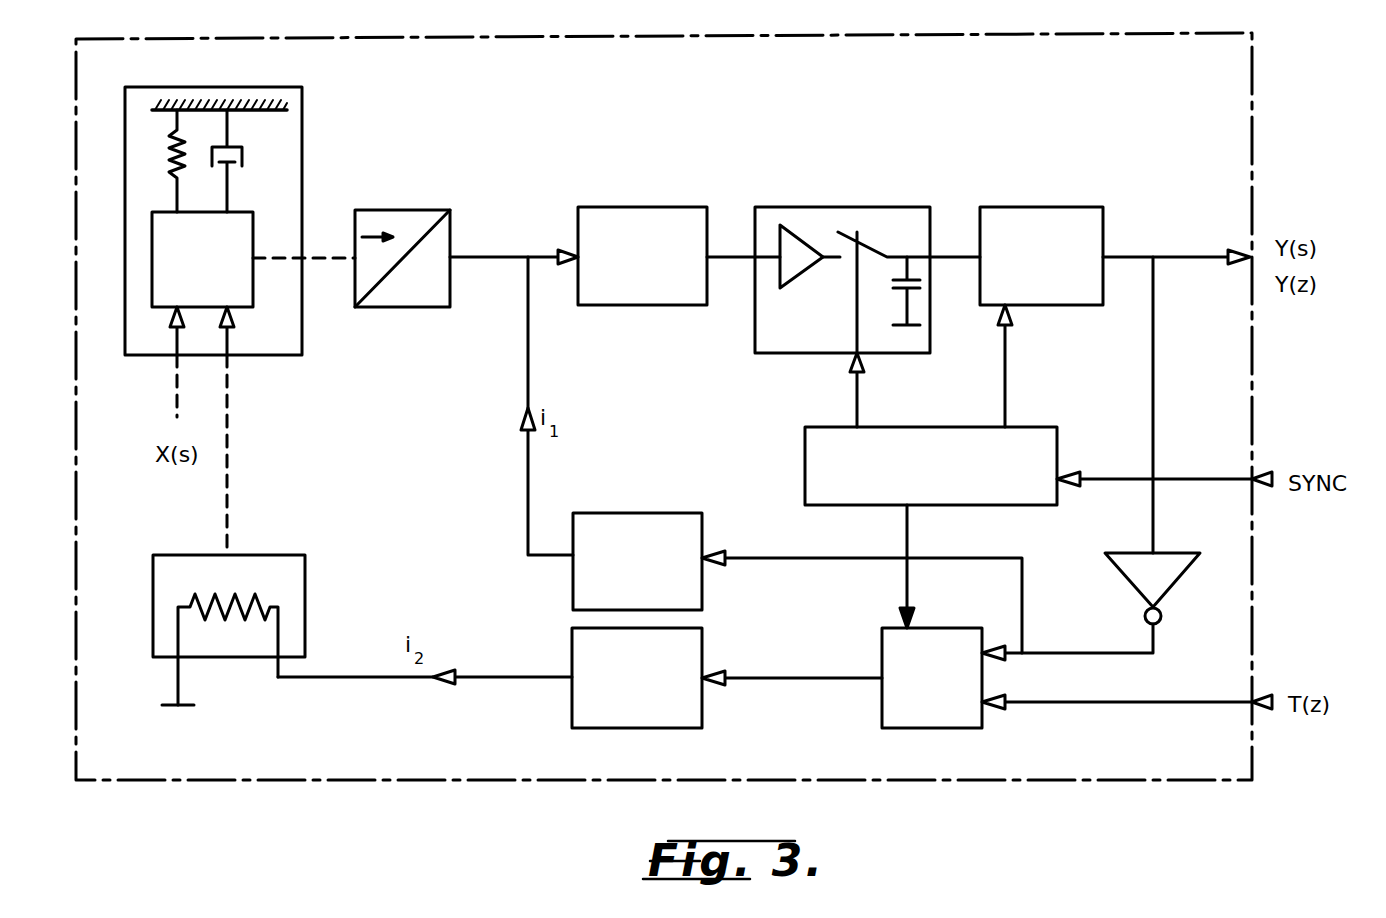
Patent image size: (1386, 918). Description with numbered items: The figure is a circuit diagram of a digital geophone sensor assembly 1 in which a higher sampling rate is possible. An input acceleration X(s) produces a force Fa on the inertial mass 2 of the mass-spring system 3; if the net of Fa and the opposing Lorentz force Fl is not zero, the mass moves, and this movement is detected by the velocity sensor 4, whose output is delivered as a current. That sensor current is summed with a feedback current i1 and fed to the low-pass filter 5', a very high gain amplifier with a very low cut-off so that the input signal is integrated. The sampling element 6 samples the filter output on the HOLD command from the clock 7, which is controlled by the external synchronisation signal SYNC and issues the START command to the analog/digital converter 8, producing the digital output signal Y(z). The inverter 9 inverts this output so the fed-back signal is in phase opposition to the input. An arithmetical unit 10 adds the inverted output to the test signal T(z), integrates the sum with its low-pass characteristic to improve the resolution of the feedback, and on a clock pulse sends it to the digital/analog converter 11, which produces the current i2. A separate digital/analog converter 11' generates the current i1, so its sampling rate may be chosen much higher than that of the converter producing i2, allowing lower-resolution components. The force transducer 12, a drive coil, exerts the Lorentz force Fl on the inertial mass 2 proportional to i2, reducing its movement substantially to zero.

The sensor assembly 1 is at (1253, 112).
The inertial mass 2 is at (248, 230).
The mass-spring system 3 is at (302, 135).
The velocity sensor 4 is at (395, 216).
The low-pass filter 5' is at (649, 241).
The sampling element 6 is at (875, 220).
The clock 7 is at (1025, 438).
The analog/digital converter 8 is at (1068, 219).
The inverter 9 is at (1170, 560).
The arithmetical unit 10 is at (950, 718).
The digital/analog converter 11 is at (637, 701).
The digital/analog converter 11' is at (637, 542).
The force transducer 12 is at (265, 562).